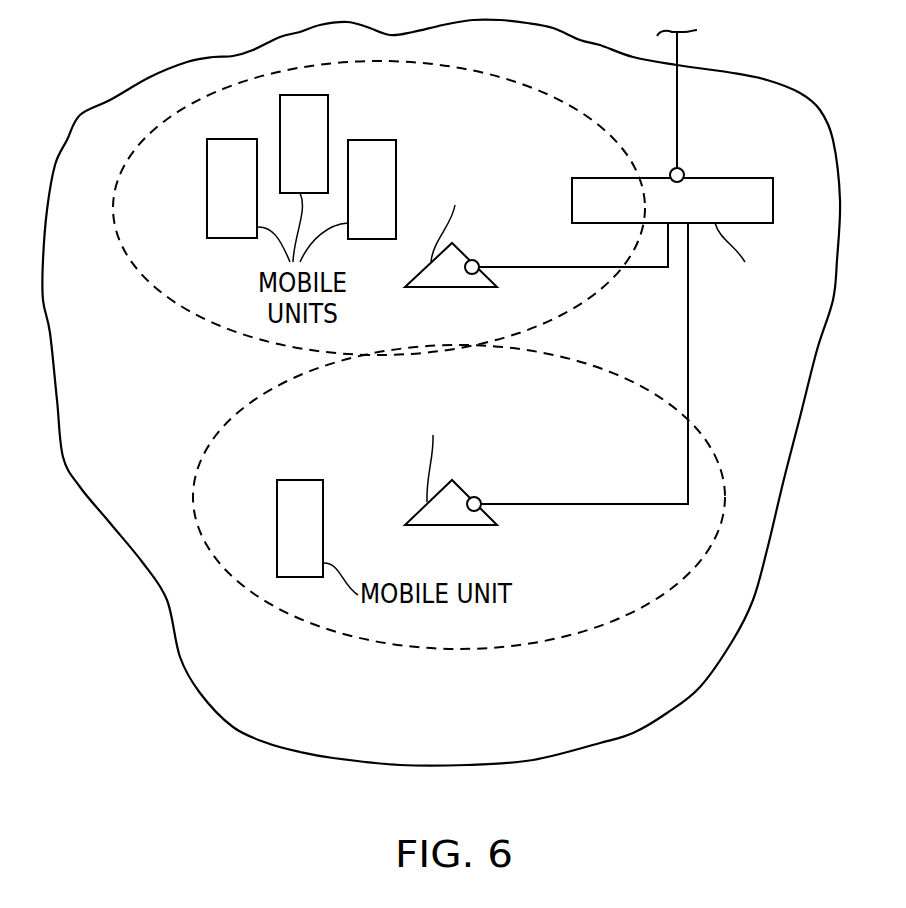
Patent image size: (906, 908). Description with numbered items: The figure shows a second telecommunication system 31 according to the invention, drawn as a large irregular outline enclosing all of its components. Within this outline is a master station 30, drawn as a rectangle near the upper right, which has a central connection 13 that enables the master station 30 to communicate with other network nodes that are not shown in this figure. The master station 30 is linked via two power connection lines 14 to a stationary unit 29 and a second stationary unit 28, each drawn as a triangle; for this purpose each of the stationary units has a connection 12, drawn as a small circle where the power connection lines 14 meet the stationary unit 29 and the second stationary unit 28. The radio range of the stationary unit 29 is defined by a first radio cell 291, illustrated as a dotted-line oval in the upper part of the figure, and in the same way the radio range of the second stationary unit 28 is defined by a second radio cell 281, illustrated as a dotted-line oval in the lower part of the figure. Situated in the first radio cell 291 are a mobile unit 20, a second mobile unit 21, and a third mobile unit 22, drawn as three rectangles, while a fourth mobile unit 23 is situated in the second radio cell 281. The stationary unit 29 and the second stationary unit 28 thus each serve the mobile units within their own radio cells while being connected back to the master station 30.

The connection 12 is at (478, 262).
The central connection 13 is at (684, 171).
The power connection lines 14 is at (546, 268).
The mobile unit 20 is at (321, 157).
The second mobile unit 21 is at (246, 203).
The third mobile unit 22 is at (386, 204).
The fourth mobile unit 23 is at (315, 542).
The second stationary unit 28 is at (445, 526).
The stationary unit 29 is at (445, 288).
The master station 30 is at (687, 217).
The telecommunication system 31 is at (263, 743).
The second radio cell 281 is at (313, 628).
The first radio cell 291 is at (236, 337).